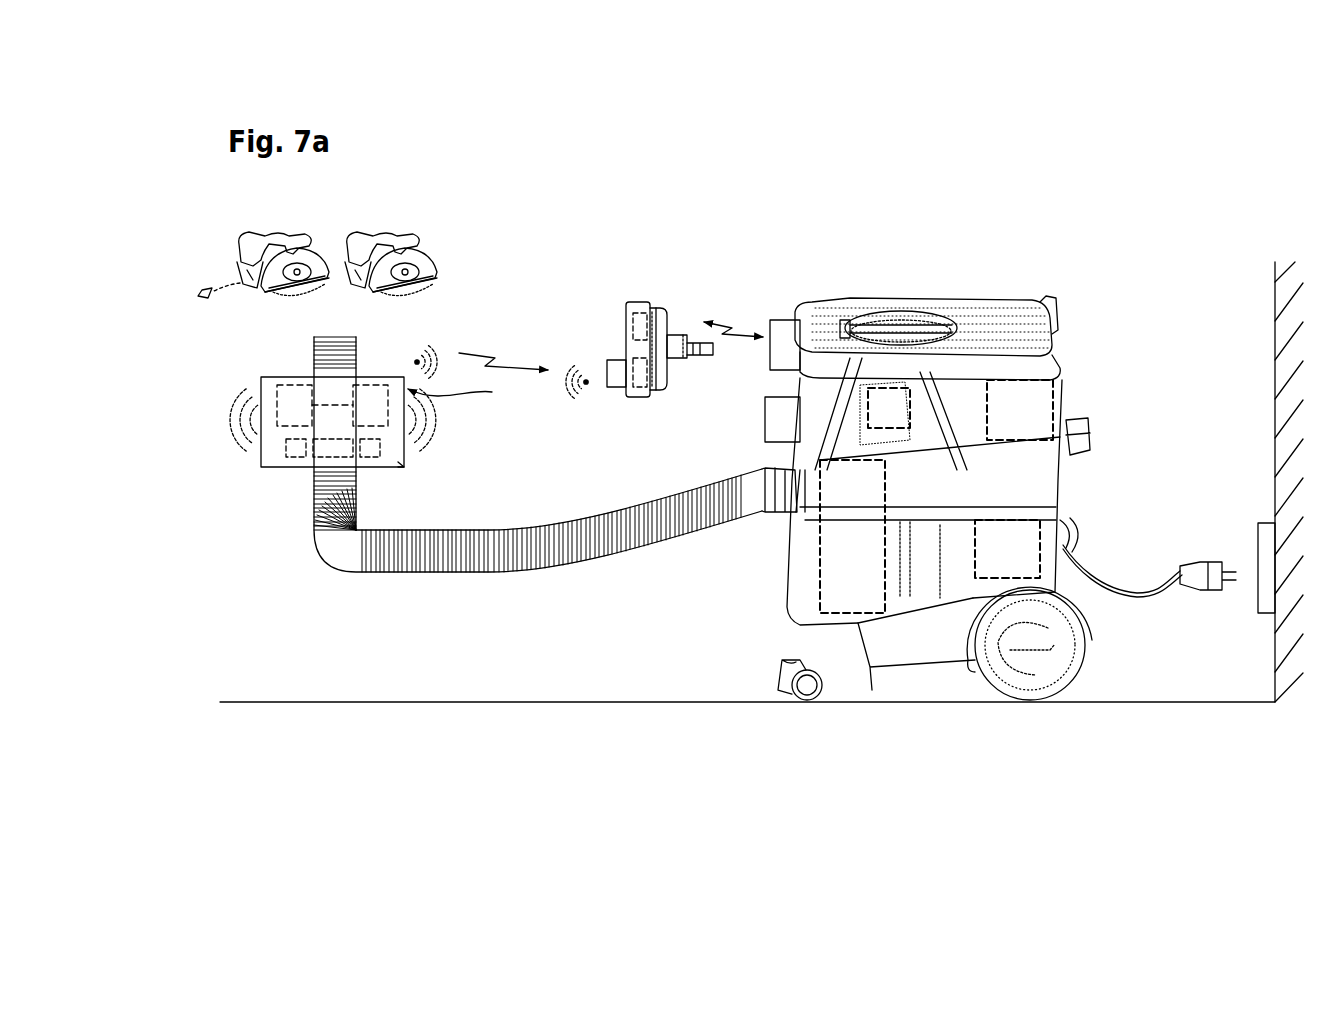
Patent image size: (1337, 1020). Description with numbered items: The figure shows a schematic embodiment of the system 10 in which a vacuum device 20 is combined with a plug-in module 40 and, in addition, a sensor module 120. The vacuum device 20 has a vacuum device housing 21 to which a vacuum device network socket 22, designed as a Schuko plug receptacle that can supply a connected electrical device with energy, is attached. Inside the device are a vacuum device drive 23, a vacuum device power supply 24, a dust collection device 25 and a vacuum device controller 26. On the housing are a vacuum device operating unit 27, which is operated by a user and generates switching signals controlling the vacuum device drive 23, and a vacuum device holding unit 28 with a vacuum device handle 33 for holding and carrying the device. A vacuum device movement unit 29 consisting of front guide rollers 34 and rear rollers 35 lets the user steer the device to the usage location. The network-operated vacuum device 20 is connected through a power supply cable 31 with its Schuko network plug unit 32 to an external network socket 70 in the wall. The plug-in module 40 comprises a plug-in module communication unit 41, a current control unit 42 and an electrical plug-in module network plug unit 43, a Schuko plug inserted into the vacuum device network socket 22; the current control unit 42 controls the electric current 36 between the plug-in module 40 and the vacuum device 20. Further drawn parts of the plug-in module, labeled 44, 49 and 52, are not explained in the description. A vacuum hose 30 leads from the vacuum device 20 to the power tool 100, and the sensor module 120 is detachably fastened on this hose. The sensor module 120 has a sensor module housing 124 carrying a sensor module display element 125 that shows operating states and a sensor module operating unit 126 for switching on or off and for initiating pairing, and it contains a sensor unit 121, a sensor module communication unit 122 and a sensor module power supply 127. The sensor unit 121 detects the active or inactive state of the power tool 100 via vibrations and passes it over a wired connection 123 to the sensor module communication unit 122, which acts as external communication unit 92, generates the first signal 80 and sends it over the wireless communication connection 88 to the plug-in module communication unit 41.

The system 10 is at (1164, 268).
The vacuum device 20 is at (1053, 294).
The vacuum device housing 21 is at (987, 302).
The vacuum device network socket 22 is at (782, 320).
The vacuum device drive 23 is at (1056, 390).
The vacuum device power supply 24 is at (1045, 550).
The dust collection device 25 is at (820, 540).
The vacuum device controller 26 is at (885, 388).
The vacuum device operating unit 27 is at (765, 420).
The vacuum device holding unit 28 is at (925, 317).
The vacuum device movement unit 29 is at (780, 714).
The vacuum hose 30 is at (490, 575).
The power supply cable 31 is at (1135, 598).
The network plug unit 32 is at (1200, 590).
The vacuum device handle 33 is at (878, 318).
The front guide rollers 34 is at (809, 688).
The rear rollers 35 is at (1053, 662).
The electric current 36 is at (730, 318).
The plug-in module 40 is at (608, 293).
The plug-in module communication unit 41 is at (633, 320).
The current control unit 42 is at (640, 398).
The electrical plug-in module network plug unit 43 is at (678, 336).
The actuation element 44 is at (614, 388).
The circuit board 49 is at (660, 308).
The control unit of adapter 52 is at (633, 347).
The external network socket 70 is at (1258, 525).
The first signal 80 is at (440, 345).
The communication connection 88 is at (477, 352).
The external communication unit 92 is at (464, 391).
The power tool 100 is at (307, 221).
The sensor module 120 is at (432, 459).
The sensor unit 121 is at (277, 395).
The sensor module communication unit 122 is at (370, 385).
The wired connection 123 is at (337, 405).
The sensor module housing 124 is at (400, 468).
The sensor module display element 125 is at (286, 448).
The sensor module operating unit 126 is at (372, 467).
The sensor module power supply 127 is at (325, 467).